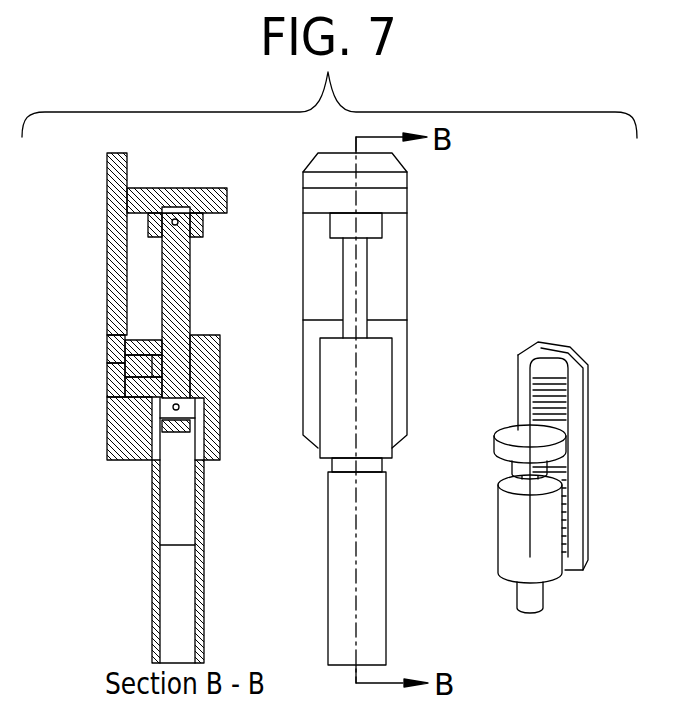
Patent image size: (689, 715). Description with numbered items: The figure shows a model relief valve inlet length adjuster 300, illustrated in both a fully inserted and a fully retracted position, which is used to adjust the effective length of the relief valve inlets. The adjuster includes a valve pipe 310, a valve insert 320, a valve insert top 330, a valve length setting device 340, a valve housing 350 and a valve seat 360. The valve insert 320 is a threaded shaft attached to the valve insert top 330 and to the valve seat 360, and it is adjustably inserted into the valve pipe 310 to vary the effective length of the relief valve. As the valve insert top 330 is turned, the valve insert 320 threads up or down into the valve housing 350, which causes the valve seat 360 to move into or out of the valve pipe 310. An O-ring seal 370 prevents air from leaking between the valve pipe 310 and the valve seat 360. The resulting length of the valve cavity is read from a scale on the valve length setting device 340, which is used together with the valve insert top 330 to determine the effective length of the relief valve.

The relief valve inlet length adjuster 300 is at (595, 185).
The valve pipe 310 is at (152, 520).
The valve insert 320 is at (190, 273).
The valve insert top 330 is at (190, 188).
The valve length setting device 340 is at (107, 251).
The valve housing 350 is at (372, 382).
The valve seat 360 is at (200, 427).
The O-ring seal 370 is at (150, 418).